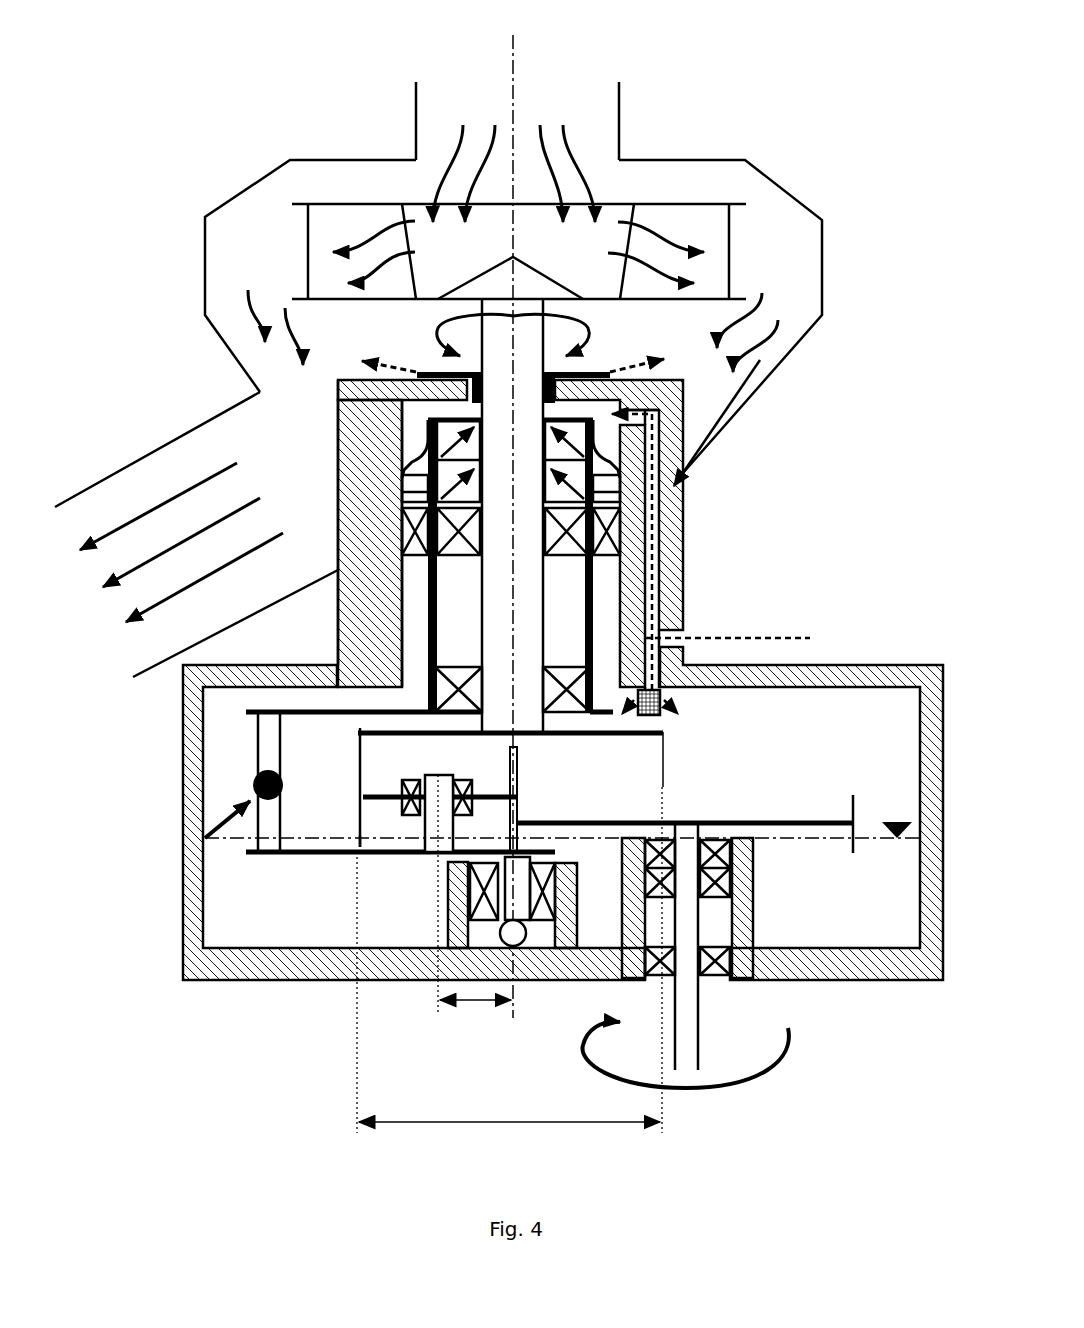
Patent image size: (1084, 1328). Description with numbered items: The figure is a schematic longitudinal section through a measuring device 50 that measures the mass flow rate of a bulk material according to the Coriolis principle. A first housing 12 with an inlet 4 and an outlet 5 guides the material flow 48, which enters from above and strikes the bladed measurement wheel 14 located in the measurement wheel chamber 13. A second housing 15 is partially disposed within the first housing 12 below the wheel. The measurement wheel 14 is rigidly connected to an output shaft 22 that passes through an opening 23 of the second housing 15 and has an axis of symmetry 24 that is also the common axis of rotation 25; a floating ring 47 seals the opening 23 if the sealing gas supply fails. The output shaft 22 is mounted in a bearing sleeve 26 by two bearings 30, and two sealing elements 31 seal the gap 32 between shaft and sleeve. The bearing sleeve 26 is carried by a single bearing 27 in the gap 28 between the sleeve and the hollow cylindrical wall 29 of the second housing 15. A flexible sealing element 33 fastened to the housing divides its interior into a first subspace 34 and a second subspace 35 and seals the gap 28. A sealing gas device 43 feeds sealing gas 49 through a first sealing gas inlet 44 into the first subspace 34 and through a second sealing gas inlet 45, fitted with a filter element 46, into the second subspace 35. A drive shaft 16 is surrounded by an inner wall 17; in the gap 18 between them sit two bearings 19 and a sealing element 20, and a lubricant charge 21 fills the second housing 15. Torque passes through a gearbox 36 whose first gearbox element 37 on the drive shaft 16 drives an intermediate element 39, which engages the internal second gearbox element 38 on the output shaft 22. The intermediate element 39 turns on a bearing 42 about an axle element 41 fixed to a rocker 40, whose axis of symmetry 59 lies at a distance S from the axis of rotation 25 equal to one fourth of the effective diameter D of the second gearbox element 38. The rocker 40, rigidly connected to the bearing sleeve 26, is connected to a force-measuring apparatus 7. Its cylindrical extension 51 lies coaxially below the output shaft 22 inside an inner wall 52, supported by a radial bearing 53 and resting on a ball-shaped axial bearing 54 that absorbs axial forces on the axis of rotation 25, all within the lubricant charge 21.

The inlet 4 is at (620, 93).
The outlet 5 is at (170, 440).
The force-measuring apparatus 7 is at (253, 782).
The first housing 12 is at (205, 238).
The measurement wheel chamber 13 is at (780, 223).
The measurement wheel 14 is at (612, 205).
The second housing 15 is at (183, 908).
The drive shaft 16 is at (700, 1013).
The inner wall 17 is at (753, 883).
The gap 18 is at (603, 960).
The bearings 19 is at (717, 937).
The sealing element 20 is at (720, 837).
The lubricant charge 21 is at (873, 835).
The output shaft 22 is at (662, 555).
The opening 23 is at (593, 372).
The axis of symmetry 24 is at (505, 40).
The axis of rotation 25 is at (437, 516).
The bearing sleeve 26 is at (385, 622).
The bearing 27 is at (372, 566).
The gap 28 is at (660, 587).
The wall 29 is at (338, 497).
The bearings 30 is at (450, 667).
The sealing elements 31 is at (483, 440).
The gap 32 is at (658, 598).
The flexible sealing element 33 is at (405, 450).
The first subspace 34 is at (357, 383).
The second subspace 35 is at (867, 690).
The gearbox 36 is at (778, 812).
The first gearbox element 37 is at (518, 813).
The second gearbox element 38 is at (357, 765).
The intermediate element 39 is at (357, 830).
The rocker 40 is at (288, 855).
The axle element 41 is at (432, 775).
The bearing 42 is at (423, 812).
The sealing gas device 43 is at (670, 487).
The first sealing gas inlet 44 is at (662, 418).
The second sealing gas inlet 45 is at (657, 673).
The filter element 46 is at (663, 718).
The floating ring 47 is at (428, 367).
The material flow 48 is at (463, 135).
The sealing gas 49 is at (767, 637).
The measuring device 50 is at (200, 105).
The extension 51 is at (522, 863).
The inner wall 52 is at (577, 933).
The radial bearing 53 is at (552, 958).
The axial bearing 54 is at (465, 962).
The axis of symmetry 59 is at (437, 933).
The distance S is at (482, 1005).
The effective diameter D is at (435, 1123).